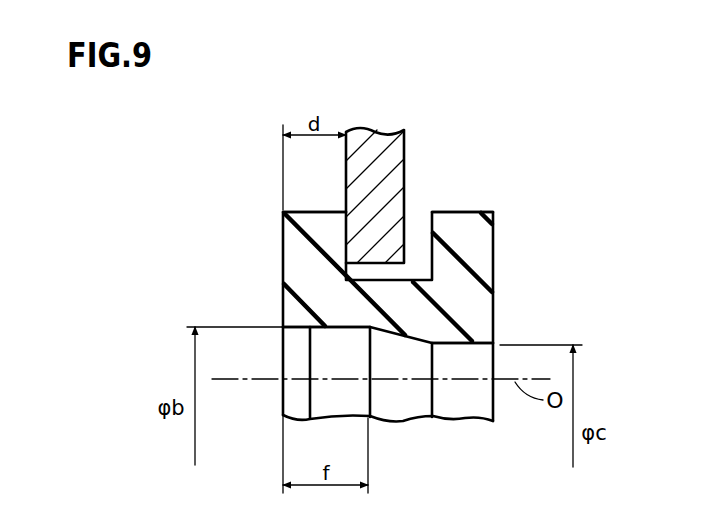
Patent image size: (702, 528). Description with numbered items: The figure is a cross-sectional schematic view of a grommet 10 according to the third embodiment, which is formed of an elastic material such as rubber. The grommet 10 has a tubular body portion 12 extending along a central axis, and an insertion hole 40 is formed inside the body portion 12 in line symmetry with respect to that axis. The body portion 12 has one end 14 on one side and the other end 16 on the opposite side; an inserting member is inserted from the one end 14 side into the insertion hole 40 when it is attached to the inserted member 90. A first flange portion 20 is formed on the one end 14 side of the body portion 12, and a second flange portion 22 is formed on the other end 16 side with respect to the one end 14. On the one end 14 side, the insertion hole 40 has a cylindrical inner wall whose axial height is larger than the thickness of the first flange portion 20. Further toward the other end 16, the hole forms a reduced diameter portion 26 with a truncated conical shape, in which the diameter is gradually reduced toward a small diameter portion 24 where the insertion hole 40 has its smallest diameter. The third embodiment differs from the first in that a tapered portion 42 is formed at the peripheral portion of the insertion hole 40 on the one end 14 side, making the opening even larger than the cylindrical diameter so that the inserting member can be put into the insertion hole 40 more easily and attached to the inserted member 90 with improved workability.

The grommet 10 is at (302, 272).
The body portion 12 is at (315, 300).
The one end 14 is at (283, 247).
The other end 16 is at (495, 253).
The first flange portion 20 is at (284, 216).
The second flange portion 22 is at (494, 223).
The small diameter portion 24 is at (494, 342).
The reduced diameter portion 26 is at (412, 333).
The insertion hole 40 is at (472, 390).
The tapered portion 42 is at (283, 324).
The inserted member 90 is at (377, 171).